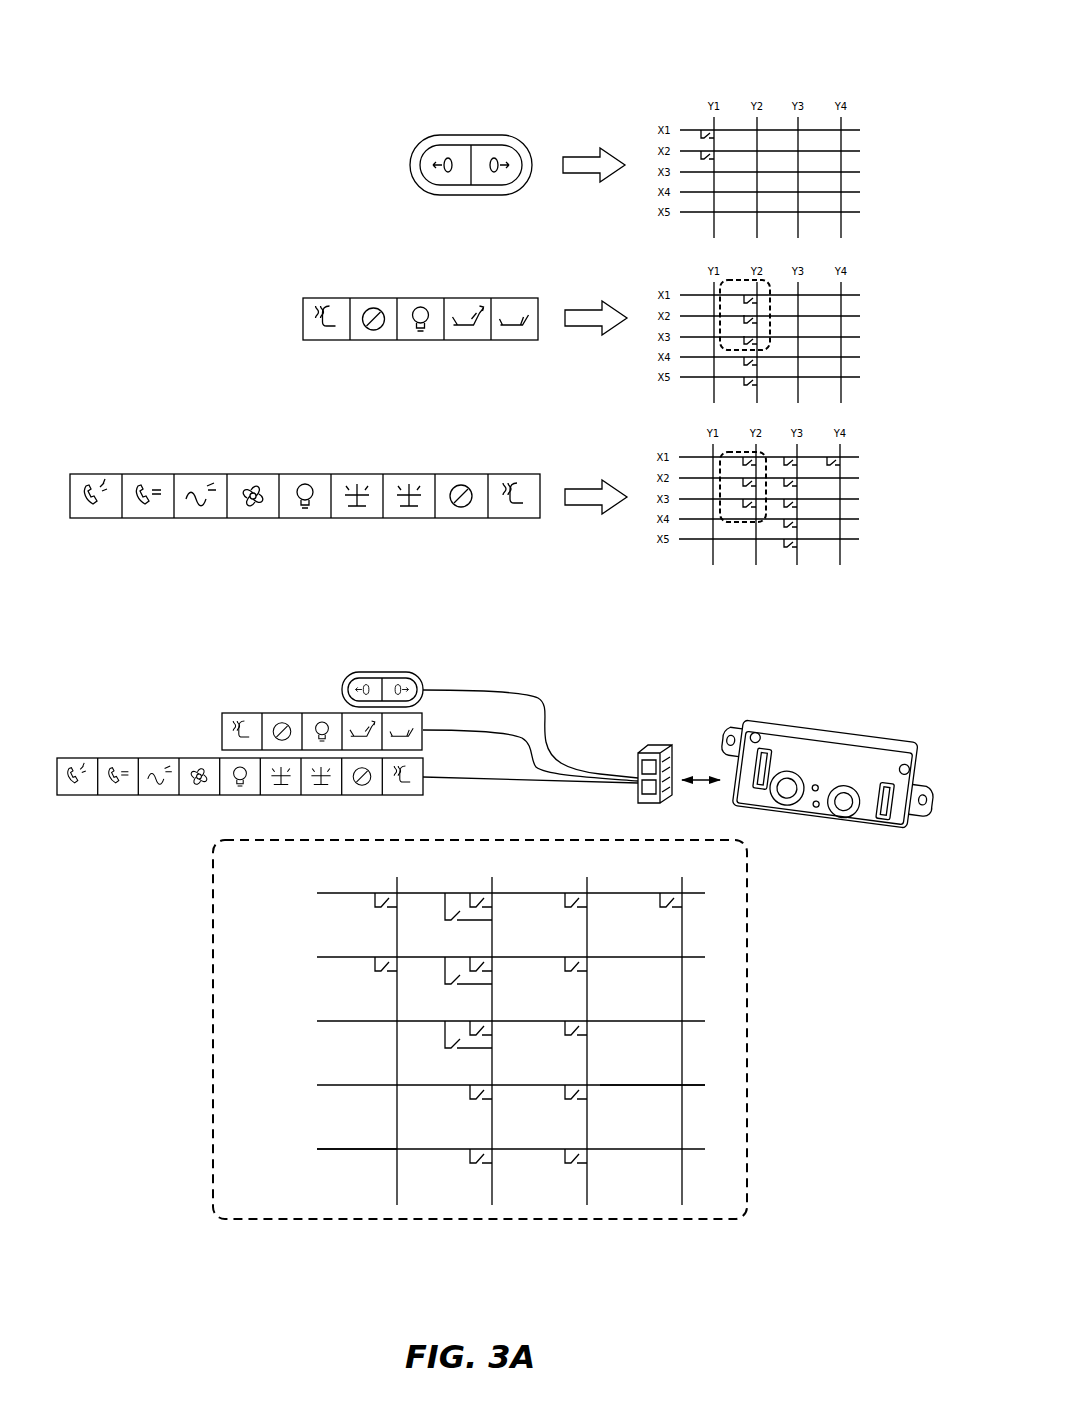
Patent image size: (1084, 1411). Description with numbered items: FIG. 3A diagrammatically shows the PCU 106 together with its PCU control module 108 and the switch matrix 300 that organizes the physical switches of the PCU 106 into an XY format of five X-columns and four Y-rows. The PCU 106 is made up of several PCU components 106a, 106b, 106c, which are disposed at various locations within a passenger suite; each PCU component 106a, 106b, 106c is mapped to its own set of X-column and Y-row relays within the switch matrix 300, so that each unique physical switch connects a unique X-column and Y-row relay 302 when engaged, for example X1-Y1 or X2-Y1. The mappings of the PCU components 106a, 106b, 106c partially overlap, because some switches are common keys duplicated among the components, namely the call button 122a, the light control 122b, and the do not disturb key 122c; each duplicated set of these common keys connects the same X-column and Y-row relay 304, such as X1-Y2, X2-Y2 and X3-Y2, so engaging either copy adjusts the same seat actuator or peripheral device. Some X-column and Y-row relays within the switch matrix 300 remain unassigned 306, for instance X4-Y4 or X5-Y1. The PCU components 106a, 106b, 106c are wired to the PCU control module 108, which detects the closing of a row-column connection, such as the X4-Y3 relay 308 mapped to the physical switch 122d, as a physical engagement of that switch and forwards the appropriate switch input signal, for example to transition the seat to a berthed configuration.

The switch matrix 300 is at (807, 72).
The X-column and Y-row relay 302 is at (690, 130).
The X-column and Y-row relay for common keys 304 is at (720, 293).
The unassigned relay 306 is at (380, 1158).
The X4-Y3 relay 308 is at (735, 366).
The PCU 106 is at (150, 738).
The PCU component 106a is at (370, 130).
The PCU component 106b is at (270, 292).
The PCU component 106c is at (160, 432).
The PCU control module 108 is at (795, 760).
The call button 122a is at (313, 335).
The light control 122b is at (435, 302).
The do not disturb 122c is at (380, 300).
The physical switch 122d is at (478, 330).